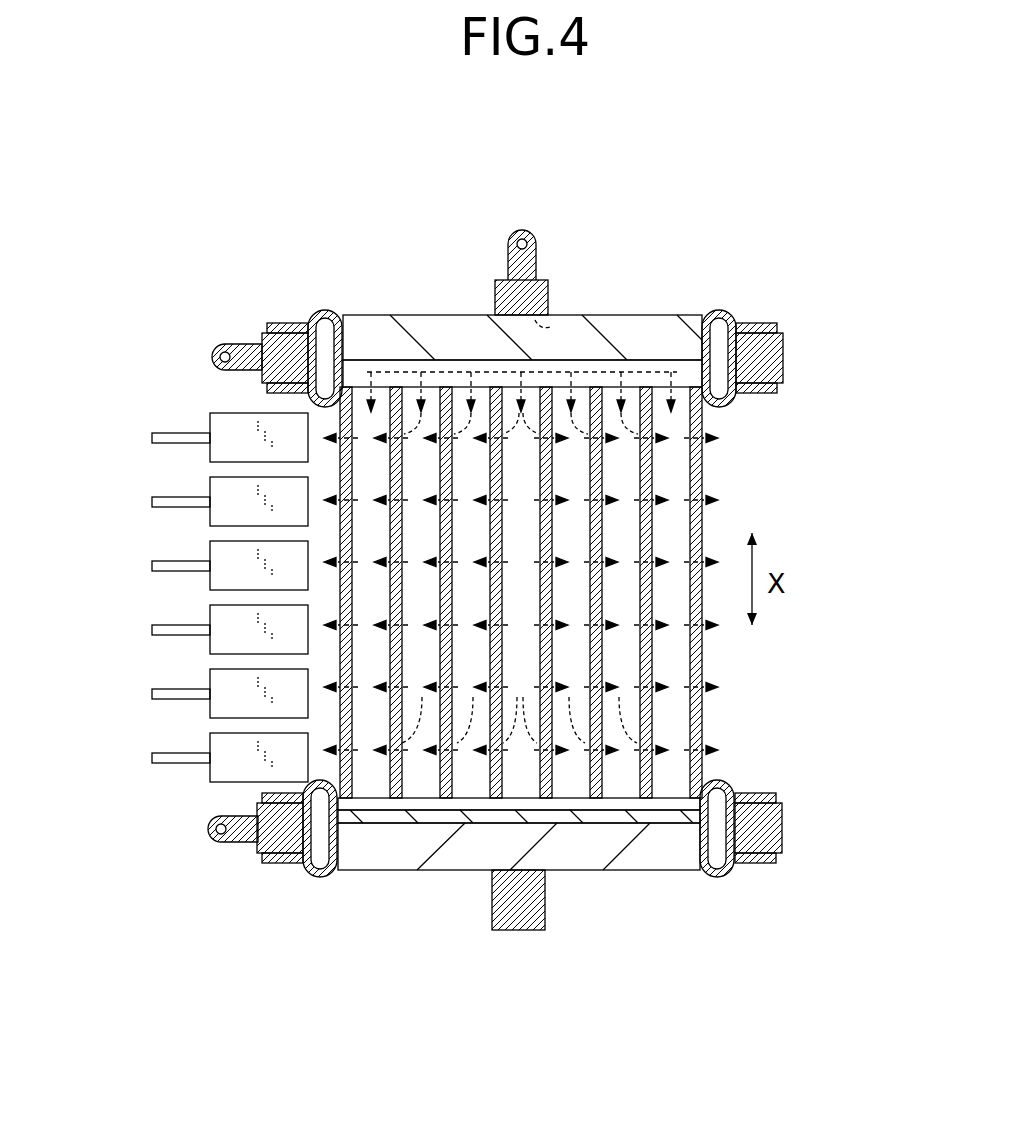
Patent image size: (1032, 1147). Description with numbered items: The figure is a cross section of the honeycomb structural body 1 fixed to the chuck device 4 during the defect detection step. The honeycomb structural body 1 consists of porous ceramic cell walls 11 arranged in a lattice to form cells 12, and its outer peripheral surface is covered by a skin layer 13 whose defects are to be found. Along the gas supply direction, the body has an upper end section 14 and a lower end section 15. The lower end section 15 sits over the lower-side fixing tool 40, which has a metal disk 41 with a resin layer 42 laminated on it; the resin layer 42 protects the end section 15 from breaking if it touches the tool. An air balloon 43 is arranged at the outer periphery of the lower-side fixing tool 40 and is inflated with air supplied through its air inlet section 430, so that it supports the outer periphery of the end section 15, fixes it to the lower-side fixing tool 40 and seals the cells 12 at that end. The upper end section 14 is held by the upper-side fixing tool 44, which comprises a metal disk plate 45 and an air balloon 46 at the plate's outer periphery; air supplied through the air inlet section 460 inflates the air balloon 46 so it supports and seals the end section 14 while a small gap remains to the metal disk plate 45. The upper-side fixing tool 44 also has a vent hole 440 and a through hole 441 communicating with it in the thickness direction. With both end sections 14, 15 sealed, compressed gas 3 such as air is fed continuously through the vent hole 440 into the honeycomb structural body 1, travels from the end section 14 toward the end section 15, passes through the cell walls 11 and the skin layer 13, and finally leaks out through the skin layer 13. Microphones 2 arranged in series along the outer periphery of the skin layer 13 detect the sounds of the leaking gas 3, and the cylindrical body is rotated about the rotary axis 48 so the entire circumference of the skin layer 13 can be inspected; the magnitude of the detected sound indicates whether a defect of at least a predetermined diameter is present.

The honeycomb structural body 1 is at (732, 425).
The microphones 2 is at (227, 423).
The gas 3 is at (430, 360).
The chuck device 4 is at (768, 308).
The cell walls 11 is at (655, 713).
The cells 12 is at (618, 476).
The skin layer 13 is at (700, 655).
The end section 14 is at (580, 387).
The end section 15 is at (563, 823).
The lower-side fixing tool 40 is at (400, 878).
The metal disk 41 is at (618, 843).
The resin layer 42 is at (655, 822).
The air balloon 43 is at (322, 878).
The upper-side fixing tool 44 is at (378, 312).
The metal disk plate 45 is at (660, 340).
The air balloon 46 is at (718, 318).
The rotary axis 48 is at (515, 900).
The air inlet section 430 is at (222, 842).
The vent hole 440 is at (522, 239).
The through hole 441 is at (545, 327).
The air inlet section 460 is at (216, 335).